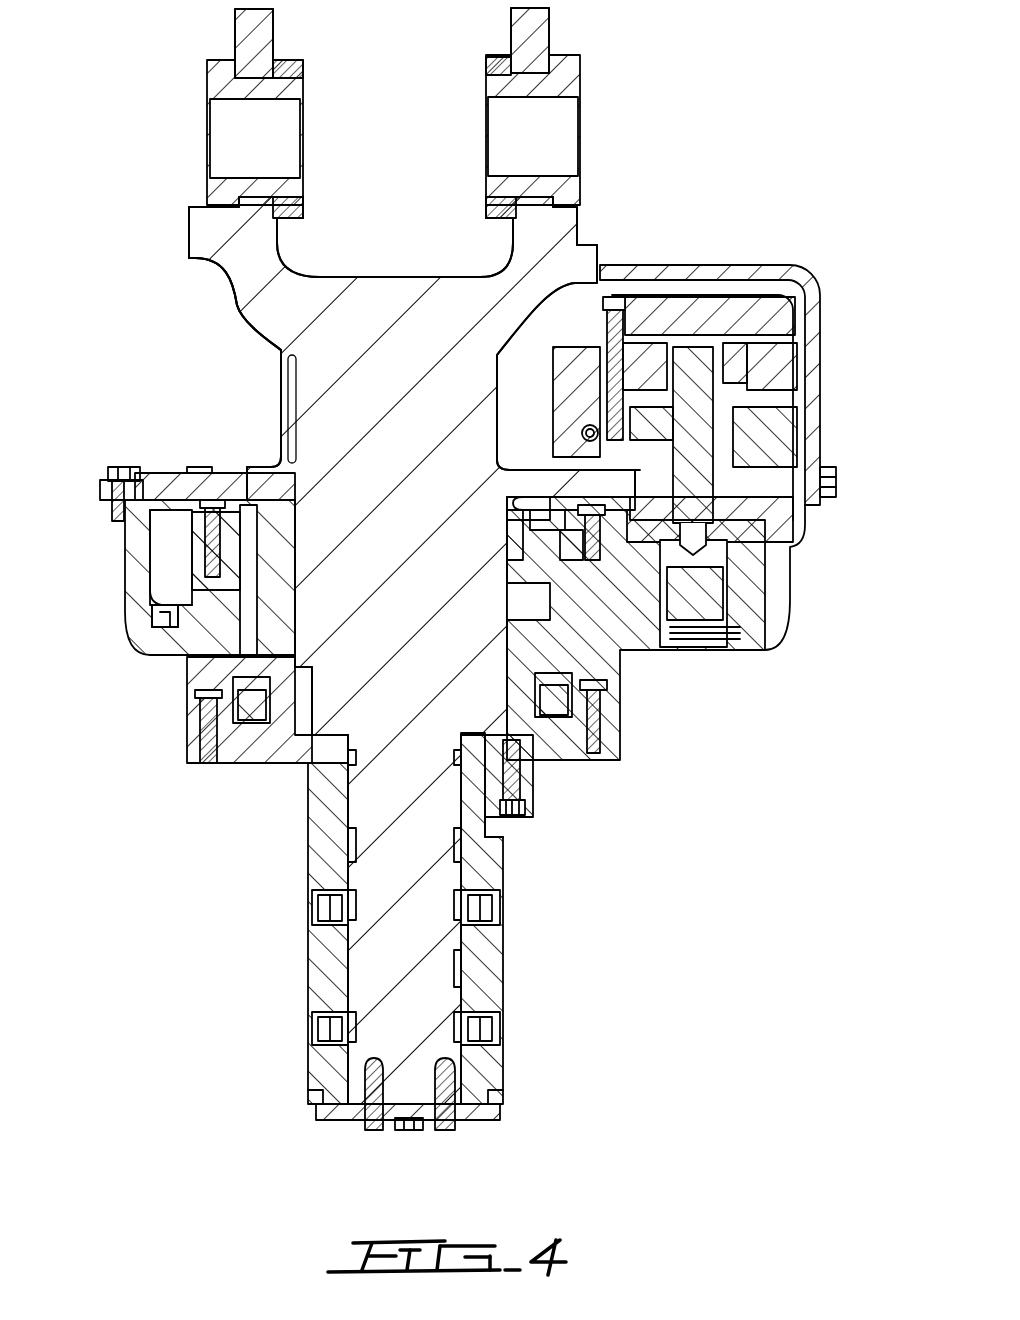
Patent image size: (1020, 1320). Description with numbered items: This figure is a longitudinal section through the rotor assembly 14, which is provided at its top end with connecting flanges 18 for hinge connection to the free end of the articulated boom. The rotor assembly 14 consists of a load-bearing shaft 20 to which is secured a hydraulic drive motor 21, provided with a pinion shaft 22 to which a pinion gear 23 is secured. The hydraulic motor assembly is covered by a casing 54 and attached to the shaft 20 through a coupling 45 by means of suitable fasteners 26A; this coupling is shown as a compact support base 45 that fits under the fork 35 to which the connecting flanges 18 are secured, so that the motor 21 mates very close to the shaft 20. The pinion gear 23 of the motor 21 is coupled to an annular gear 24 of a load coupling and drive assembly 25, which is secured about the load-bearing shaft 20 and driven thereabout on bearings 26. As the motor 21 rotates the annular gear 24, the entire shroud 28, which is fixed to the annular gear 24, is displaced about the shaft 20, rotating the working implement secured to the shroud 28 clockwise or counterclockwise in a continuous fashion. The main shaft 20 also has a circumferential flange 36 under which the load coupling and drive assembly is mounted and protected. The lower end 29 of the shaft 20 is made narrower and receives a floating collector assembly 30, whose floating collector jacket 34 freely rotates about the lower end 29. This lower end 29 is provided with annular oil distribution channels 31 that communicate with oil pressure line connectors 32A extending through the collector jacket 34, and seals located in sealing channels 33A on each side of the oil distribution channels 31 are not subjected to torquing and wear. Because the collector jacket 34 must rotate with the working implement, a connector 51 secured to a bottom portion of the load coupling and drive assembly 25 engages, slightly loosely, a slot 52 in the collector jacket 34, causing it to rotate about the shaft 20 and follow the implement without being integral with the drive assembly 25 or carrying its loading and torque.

The rotor assembly 14 is at (110, 218).
The connecting flanges 18 is at (486, 75).
The load-bearing shaft 20 is at (396, 300).
The hydraulic drive motor 21 is at (781, 309).
The pinion shaft 22 is at (705, 407).
The pinion gear 23 is at (742, 526).
The annular gear 24 is at (160, 540).
The load coupling and drive assembly 25 is at (184, 709).
The bearings 26 is at (195, 568).
The fasteners 26A is at (626, 305).
The shroud 28 is at (165, 637).
The lower end of the shaft 29 is at (420, 872).
The floating collector assembly 30 is at (297, 915).
The annular oil distribution channels 31 is at (347, 883).
The oil pressure line connectors 32A is at (325, 1040).
The sealing channels 33A is at (347, 800).
The floating collector jacket 34 is at (327, 980).
The fork 35 is at (255, 293).
The circumferential flange 36 is at (166, 472).
The coupling 45 is at (577, 415).
The connector 51 is at (537, 780).
The slot 52 is at (503, 836).
The casing 54 is at (728, 272).